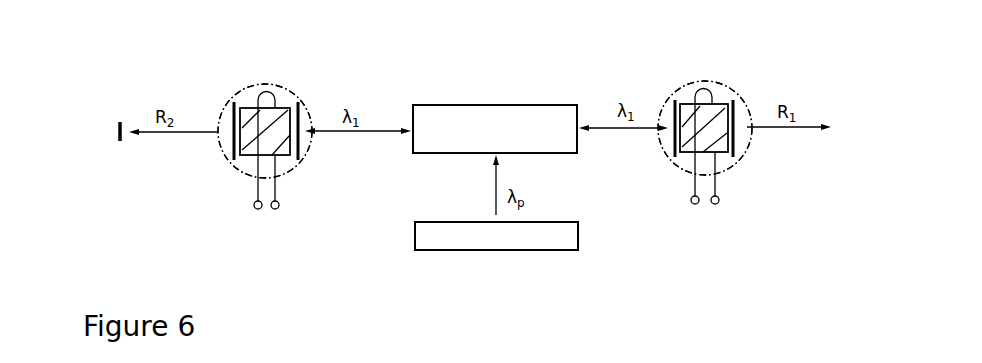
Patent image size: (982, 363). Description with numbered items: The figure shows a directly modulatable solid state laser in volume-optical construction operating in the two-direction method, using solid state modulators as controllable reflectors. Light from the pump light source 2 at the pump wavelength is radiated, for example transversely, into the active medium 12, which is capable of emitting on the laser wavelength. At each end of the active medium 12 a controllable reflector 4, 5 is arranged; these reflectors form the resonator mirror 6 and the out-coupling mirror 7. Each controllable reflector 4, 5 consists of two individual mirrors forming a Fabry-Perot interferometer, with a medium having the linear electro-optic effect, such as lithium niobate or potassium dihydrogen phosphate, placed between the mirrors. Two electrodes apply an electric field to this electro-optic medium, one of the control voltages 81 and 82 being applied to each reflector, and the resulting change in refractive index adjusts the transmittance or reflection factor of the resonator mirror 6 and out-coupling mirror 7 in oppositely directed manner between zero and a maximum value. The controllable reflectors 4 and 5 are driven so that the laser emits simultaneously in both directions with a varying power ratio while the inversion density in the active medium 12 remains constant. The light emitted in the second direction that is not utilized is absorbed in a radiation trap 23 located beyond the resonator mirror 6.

The pump light source 2 is at (515, 238).
The active medium 12 is at (528, 115).
The controllable reflector 4 is at (233, 167).
The resonator mirror 6 is at (233, 167).
The controllable reflector 5 is at (672, 162).
The out-coupling mirror 7 is at (672, 162).
The radiation trap 23 is at (122, 153).
The control voltage 81 is at (268, 193).
The control voltage 82 is at (705, 193).